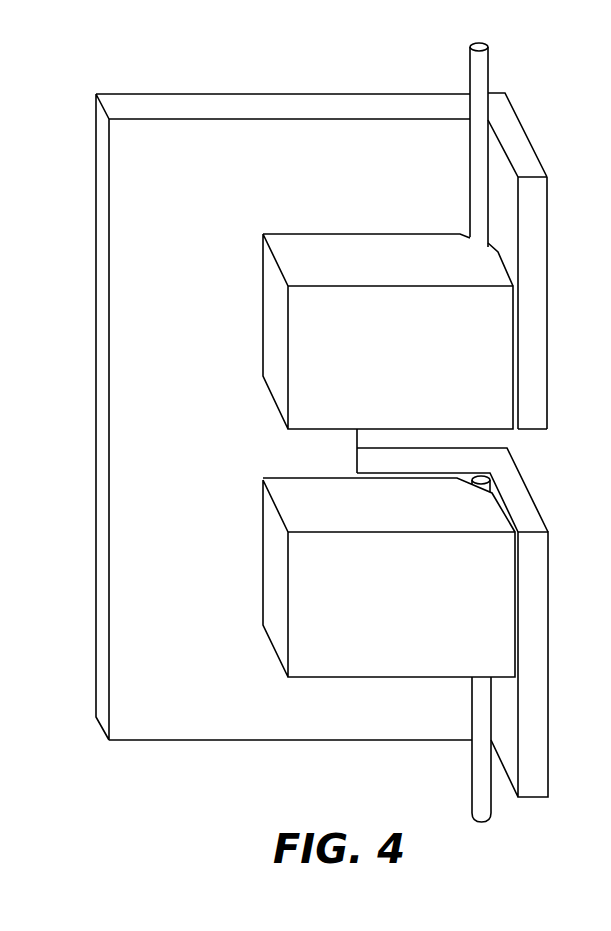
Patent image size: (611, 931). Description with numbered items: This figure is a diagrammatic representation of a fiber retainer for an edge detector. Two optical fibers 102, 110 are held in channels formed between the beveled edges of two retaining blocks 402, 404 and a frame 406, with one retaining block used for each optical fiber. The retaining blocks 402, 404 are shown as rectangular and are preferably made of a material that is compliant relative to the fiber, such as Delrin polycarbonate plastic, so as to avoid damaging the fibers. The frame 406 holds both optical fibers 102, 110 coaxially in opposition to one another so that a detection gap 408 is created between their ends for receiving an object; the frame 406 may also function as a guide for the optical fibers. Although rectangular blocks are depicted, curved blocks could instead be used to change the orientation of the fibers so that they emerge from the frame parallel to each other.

The optical fiber 102 is at (488, 73).
The optical fiber 110 is at (473, 800).
The retaining block 402 is at (503, 350).
The retaining block 404 is at (507, 610).
The frame 406 is at (176, 742).
The detection gap 408 is at (507, 437).